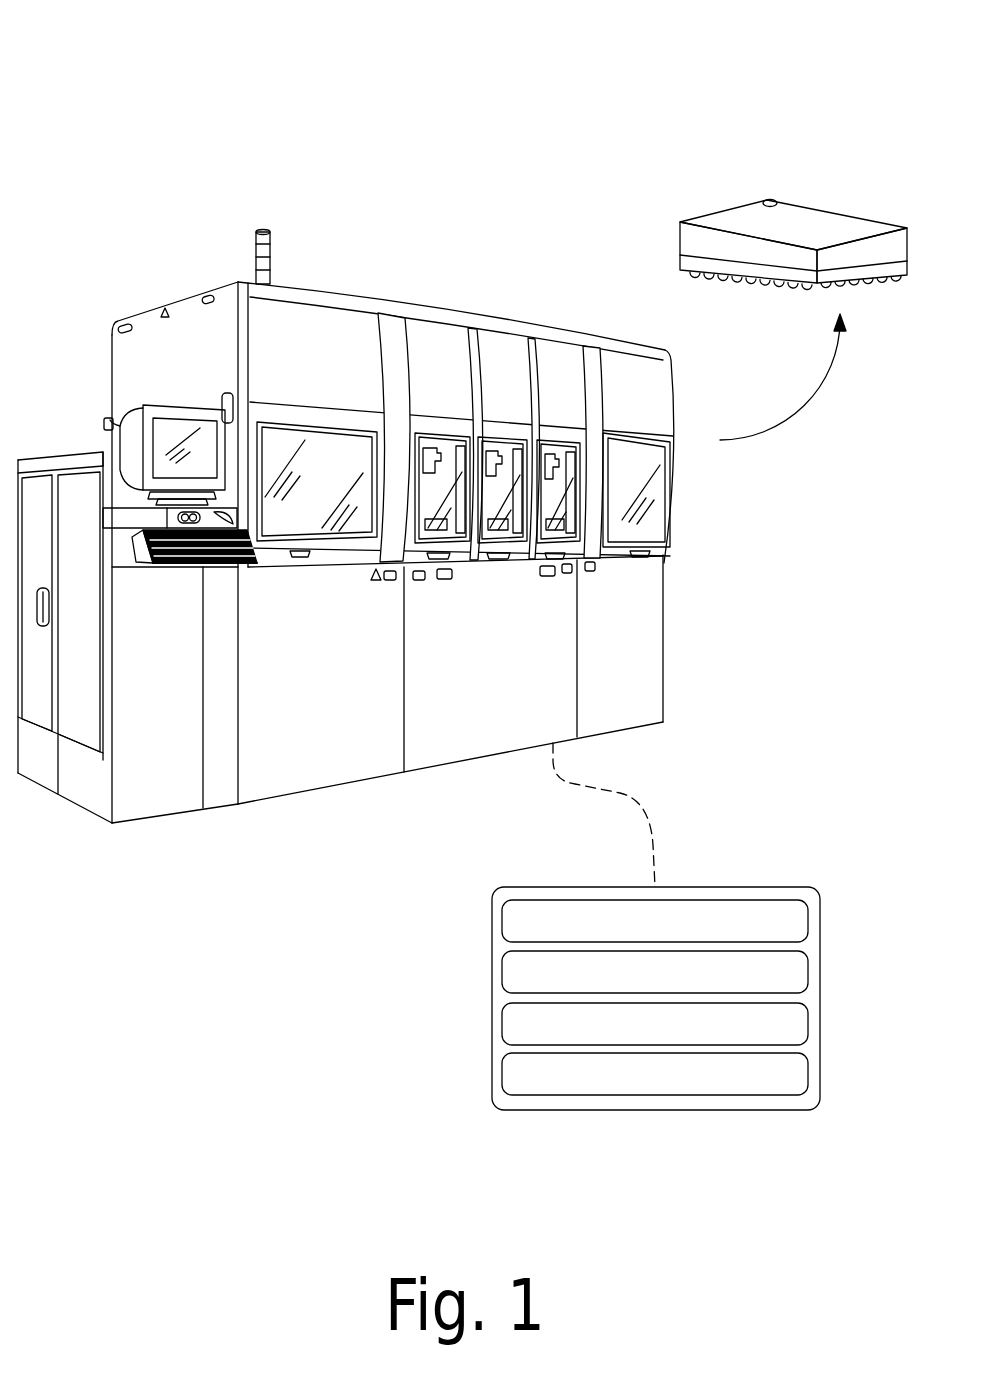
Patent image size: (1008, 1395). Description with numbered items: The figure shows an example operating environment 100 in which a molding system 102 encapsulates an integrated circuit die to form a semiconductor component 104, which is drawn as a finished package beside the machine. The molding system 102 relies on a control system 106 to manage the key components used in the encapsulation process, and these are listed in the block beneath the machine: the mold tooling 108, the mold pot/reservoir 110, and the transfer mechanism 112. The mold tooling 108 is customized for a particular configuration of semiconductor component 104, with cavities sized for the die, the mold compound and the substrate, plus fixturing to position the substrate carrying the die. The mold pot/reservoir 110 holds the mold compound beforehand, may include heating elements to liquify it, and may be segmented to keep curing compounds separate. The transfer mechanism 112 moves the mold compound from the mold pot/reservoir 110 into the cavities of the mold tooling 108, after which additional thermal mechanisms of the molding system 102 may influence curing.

The operating environment 100 is at (150, 70).
The molding system 102 is at (234, 280).
The semiconductor component 104 is at (722, 212).
The control system 106 is at (795, 932).
The mold tooling 108 is at (795, 984).
The mold pot/reservoir 110 is at (795, 1036).
The transfer mechanism 112 is at (795, 1086).